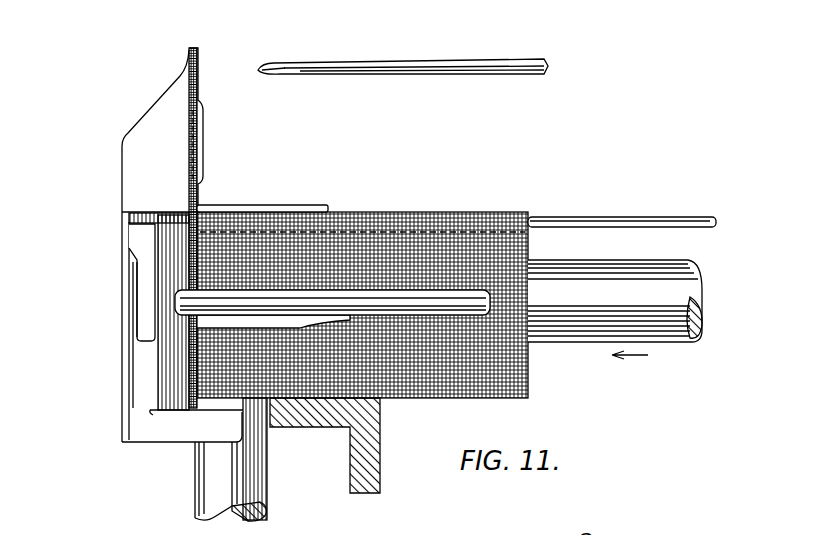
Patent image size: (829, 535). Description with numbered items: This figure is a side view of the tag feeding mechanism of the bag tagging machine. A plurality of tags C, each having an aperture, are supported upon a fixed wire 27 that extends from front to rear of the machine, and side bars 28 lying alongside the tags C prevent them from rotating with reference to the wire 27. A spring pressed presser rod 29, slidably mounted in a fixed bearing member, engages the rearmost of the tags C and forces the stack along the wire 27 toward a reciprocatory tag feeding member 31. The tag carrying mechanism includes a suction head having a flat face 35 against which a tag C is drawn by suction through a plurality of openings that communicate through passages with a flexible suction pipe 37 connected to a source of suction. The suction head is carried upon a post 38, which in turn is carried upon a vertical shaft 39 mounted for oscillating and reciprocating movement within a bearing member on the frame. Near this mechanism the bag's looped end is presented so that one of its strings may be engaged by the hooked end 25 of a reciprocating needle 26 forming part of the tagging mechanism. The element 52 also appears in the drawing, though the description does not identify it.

The hooked end 25 is at (278, 66).
The reciprocating needle 26 is at (434, 66).
The fixed wire 27 is at (614, 213).
The side bars 28 is at (332, 308).
The presser rod 29 is at (575, 338).
The tag feeding member 31 is at (150, 137).
The flat face 35 is at (200, 100).
The suction pipe 37 is at (143, 272).
The post 38 is at (144, 350).
The vertical shaft 39 is at (200, 478).
The tags C is at (199, 85).
The element 52 is at (422, 528).